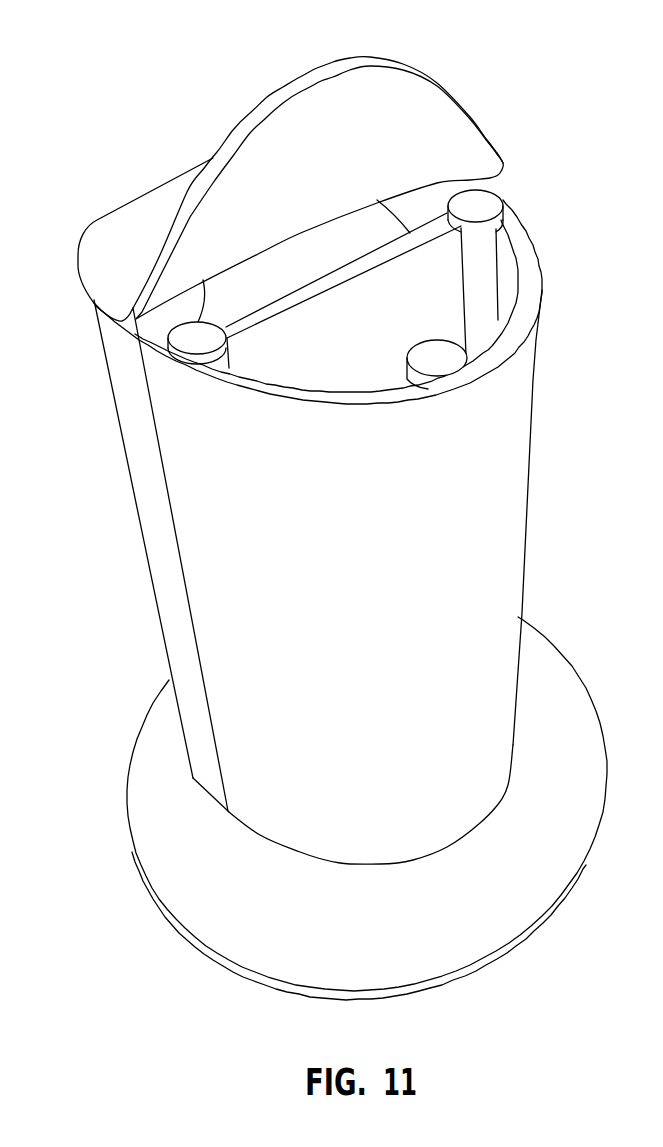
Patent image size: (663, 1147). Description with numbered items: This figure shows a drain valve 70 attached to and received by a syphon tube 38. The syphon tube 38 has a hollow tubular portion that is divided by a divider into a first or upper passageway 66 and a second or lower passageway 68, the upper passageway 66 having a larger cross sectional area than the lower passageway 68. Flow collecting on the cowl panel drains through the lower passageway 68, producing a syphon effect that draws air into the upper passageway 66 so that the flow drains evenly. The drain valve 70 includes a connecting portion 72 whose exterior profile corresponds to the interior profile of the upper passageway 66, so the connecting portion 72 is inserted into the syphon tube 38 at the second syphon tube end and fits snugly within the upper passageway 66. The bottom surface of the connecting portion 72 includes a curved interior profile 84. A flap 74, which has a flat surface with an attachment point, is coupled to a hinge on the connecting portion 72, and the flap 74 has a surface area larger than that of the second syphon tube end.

The syphon tube 38 is at (334, 600).
The upper passageway 66 is at (489, 185).
The lower passageway 68 is at (529, 291).
The drain valve 70 is at (136, 231).
The connecting portion 72 is at (267, 340).
The flap 74 is at (317, 171).
The curved interior profile 84 is at (343, 275).